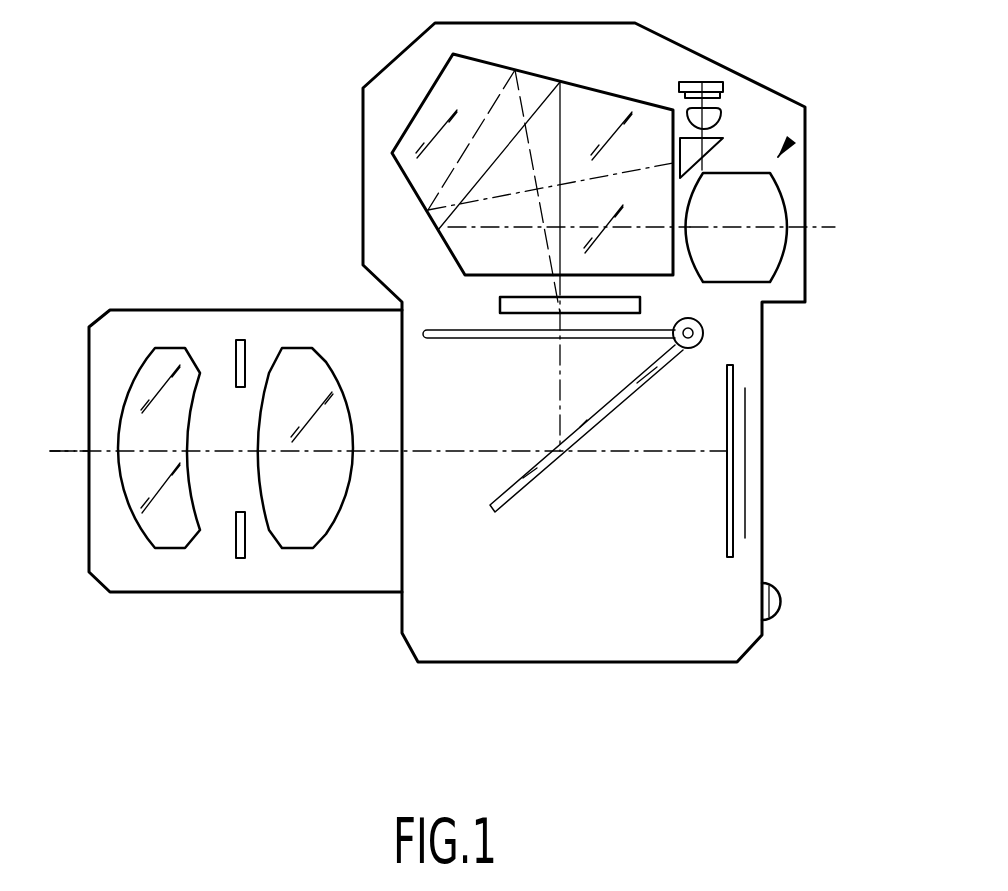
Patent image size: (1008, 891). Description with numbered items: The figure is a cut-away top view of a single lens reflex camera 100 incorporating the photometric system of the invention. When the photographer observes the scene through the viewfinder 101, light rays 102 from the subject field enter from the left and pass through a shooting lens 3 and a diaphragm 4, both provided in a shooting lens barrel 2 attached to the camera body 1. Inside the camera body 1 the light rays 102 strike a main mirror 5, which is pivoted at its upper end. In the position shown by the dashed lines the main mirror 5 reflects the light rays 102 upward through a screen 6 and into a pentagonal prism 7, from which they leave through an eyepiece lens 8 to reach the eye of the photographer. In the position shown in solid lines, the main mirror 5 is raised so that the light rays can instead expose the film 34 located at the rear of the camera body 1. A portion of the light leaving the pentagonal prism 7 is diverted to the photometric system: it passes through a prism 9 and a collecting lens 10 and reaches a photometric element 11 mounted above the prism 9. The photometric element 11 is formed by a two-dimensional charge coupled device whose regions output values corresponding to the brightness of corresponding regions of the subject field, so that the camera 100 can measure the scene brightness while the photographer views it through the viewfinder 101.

The camera body 1 is at (613, 640).
The shooting lens barrel 2 is at (273, 577).
The shooting lens 3 is at (163, 363).
The diaphragm 4 is at (238, 340).
The main mirror 5 is at (533, 480).
The screen 6 is at (640, 309).
The pentagonal prism 7 is at (578, 125).
The eyepiece lens 8 is at (767, 207).
The prism 9 is at (722, 146).
The collecting lens 10 is at (721, 119).
The photometric element 11 is at (712, 82).
The film 34 is at (740, 368).
The single lens reflex camera 100 is at (168, 133).
The viewfinder 101 is at (797, 133).
The light rays 102 is at (62, 452).